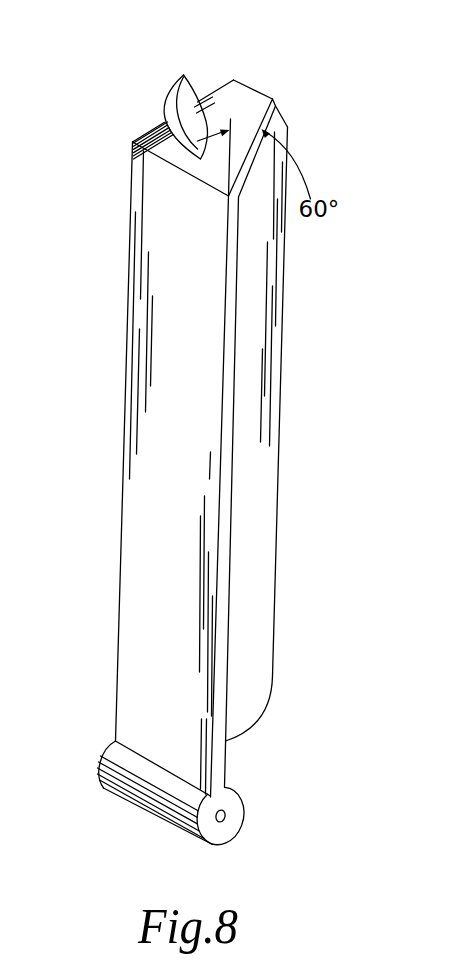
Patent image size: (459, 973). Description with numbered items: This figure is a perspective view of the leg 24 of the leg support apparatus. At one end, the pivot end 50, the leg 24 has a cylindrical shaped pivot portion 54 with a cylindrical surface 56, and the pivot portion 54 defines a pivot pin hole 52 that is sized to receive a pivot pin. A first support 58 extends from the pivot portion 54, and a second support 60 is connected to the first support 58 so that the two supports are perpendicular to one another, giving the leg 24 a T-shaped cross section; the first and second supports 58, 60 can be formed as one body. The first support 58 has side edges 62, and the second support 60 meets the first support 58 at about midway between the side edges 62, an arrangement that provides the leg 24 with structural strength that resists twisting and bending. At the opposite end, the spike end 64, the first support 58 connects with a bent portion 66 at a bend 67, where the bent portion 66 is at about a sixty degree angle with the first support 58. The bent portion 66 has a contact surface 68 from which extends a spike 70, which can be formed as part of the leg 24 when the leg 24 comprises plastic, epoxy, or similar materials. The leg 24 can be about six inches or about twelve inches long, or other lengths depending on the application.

The leg 24 is at (245, 420).
The pivot end 50 is at (213, 845).
The pivot pin hole 52 is at (224, 817).
The pivot portion 54 is at (115, 760).
The cylindrical surface 56 is at (126, 788).
The first support 58 is at (153, 515).
The second support 60 is at (247, 358).
The side edges 62 is at (232, 513).
The spike end 64 is at (225, 102).
The bent portion 66 is at (250, 102).
The bend 67 is at (190, 177).
The contact surface 68 is at (240, 97).
The spike 70 is at (166, 116).